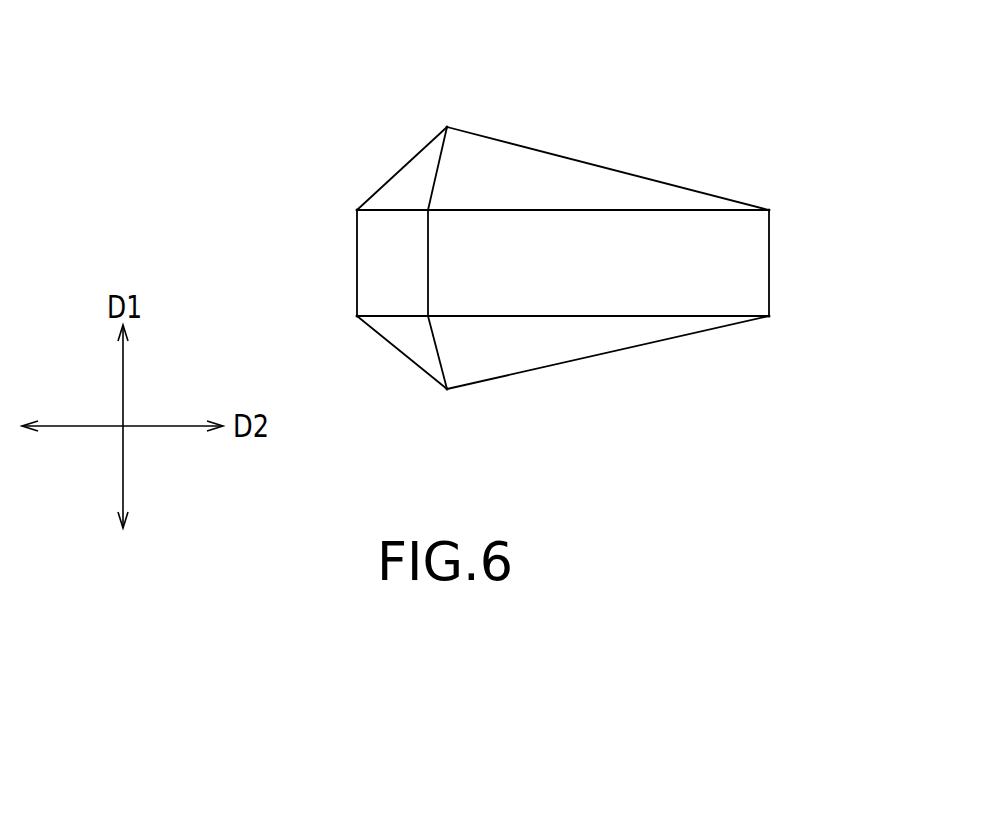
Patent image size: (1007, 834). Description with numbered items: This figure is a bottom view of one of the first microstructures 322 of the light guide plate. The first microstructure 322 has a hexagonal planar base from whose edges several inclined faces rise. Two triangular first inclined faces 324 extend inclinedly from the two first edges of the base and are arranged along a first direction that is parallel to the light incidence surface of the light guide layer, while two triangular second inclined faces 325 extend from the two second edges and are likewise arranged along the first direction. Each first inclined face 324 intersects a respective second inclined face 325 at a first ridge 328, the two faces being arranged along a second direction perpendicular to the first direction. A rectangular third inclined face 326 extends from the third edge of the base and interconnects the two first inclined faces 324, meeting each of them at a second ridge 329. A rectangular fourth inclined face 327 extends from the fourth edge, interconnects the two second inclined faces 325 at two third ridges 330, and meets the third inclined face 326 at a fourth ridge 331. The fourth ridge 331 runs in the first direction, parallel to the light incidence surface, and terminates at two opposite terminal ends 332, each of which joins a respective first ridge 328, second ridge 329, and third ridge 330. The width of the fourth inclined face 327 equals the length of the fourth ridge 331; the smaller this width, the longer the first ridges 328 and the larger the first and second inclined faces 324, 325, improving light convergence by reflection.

The first microstructure 322 is at (544, 231).
The first inclined face 324 is at (397, 193).
The second inclined face 325 is at (566, 185).
The third inclined face 326 is at (380, 267).
The fourth inclined face 327 is at (738, 276).
The first ridge 328 is at (438, 168).
The second ridge 329 is at (385, 210).
The third ridge 330 is at (680, 209).
The fourth ridge 331 is at (429, 263).
The terminal end 332 is at (428, 209).